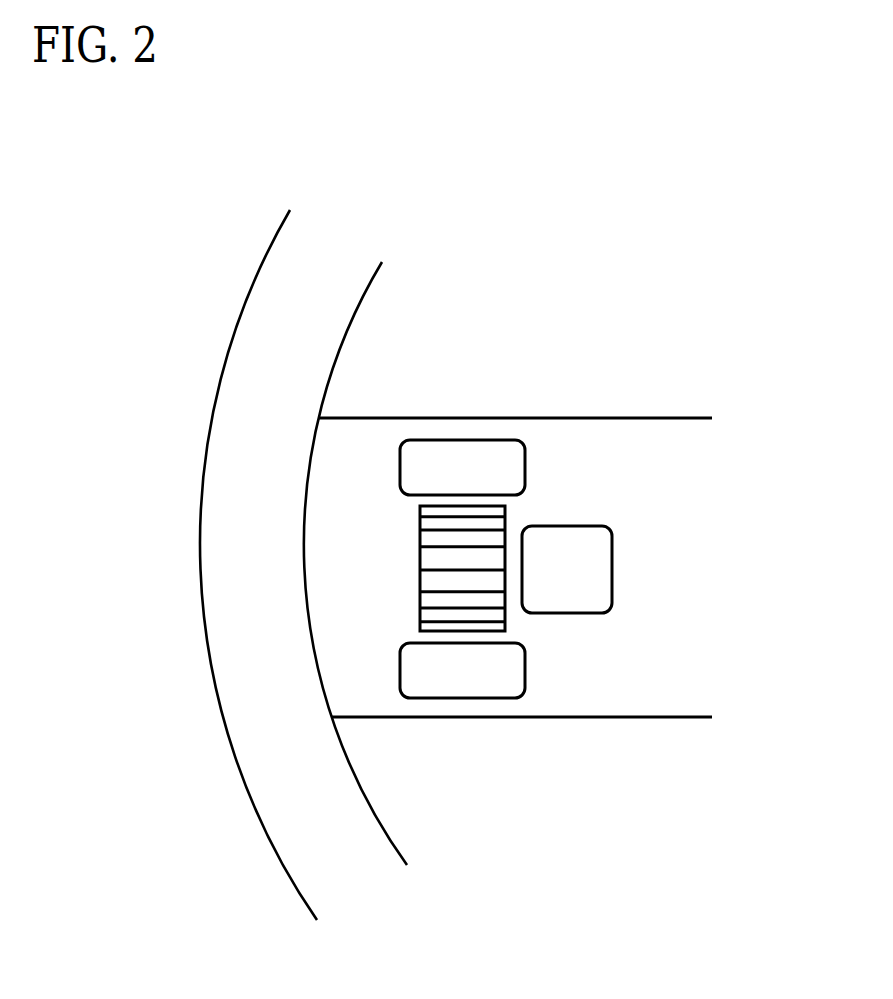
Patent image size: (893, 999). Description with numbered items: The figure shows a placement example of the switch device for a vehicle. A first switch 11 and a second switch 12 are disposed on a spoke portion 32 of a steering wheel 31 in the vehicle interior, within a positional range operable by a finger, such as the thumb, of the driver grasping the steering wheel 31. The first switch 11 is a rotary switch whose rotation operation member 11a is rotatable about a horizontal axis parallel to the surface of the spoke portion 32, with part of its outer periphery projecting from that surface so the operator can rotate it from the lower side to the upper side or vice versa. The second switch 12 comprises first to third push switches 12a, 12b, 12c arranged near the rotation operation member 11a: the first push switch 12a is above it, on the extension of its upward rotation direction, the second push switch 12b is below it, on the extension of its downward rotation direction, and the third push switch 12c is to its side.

The steering wheel 31 is at (263, 335).
The spoke portion 32 is at (622, 432).
The first switch 11 is at (437, 488).
The rotation operation member 11a is at (421, 553).
The second switch 12 is at (591, 569).
The first push switch 12a is at (510, 470).
The second push switch 12b is at (508, 672).
The third push switch 12c is at (593, 563).